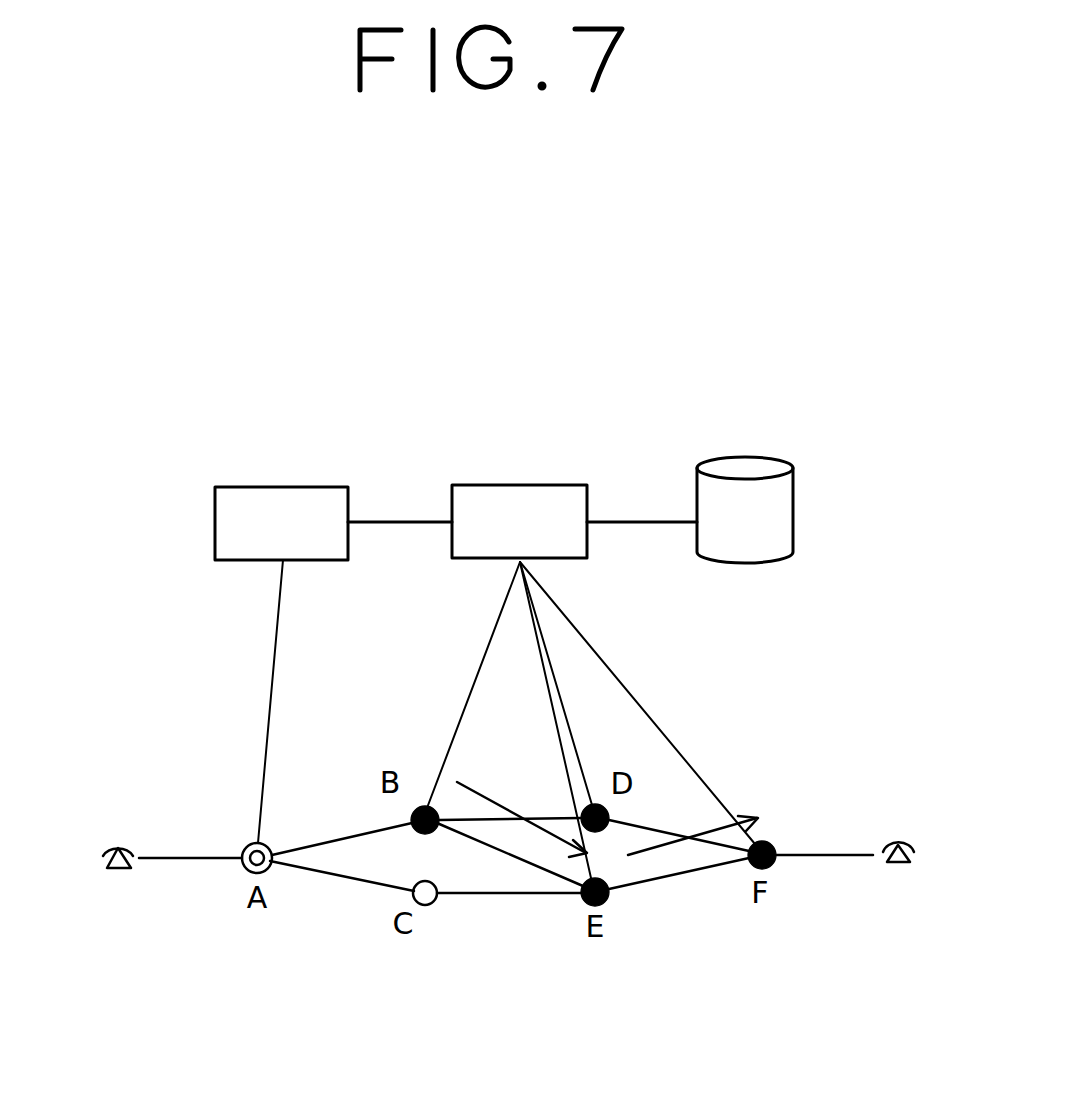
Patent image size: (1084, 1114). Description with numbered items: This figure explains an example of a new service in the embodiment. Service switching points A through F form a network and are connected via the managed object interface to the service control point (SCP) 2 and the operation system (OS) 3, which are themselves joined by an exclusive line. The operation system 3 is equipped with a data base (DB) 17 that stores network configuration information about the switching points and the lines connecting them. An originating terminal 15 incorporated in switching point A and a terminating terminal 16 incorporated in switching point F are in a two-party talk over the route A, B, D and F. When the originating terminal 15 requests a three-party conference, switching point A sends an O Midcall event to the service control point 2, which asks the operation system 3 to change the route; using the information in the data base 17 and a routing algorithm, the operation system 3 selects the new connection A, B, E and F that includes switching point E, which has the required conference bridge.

The service control point (SCP) 2 is at (283, 487).
The operation system (OS) 3 is at (522, 485).
The data base (DB) 17 is at (746, 456).
The originating terminal 15 is at (118, 871).
The terminating terminal 16 is at (898, 865).